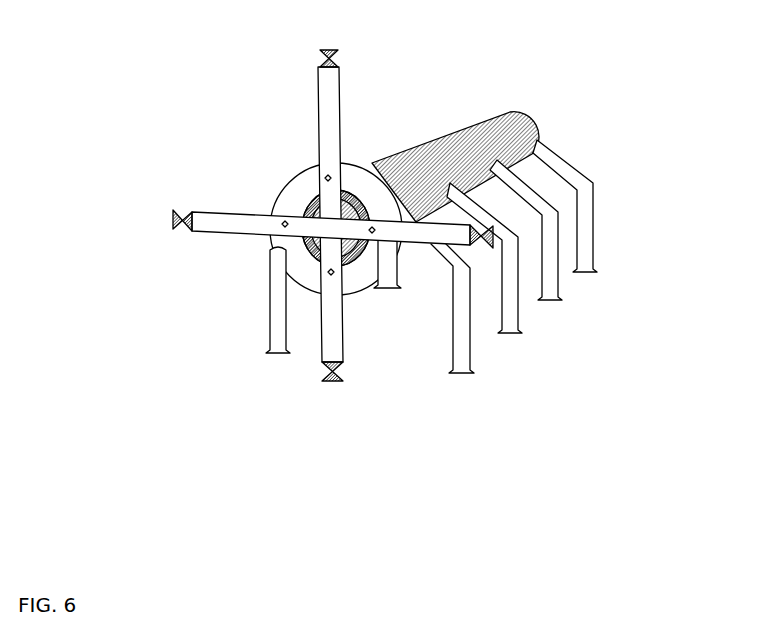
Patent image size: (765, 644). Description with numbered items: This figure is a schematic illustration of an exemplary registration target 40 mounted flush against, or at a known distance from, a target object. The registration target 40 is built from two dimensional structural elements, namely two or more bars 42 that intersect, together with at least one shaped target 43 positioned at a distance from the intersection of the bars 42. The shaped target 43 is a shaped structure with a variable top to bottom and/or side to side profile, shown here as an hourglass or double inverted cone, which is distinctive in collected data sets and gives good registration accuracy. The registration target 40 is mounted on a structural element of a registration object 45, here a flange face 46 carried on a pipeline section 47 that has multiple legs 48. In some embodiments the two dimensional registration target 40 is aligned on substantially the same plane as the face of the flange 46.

The registration target 40 is at (357, 343).
The bars 42 is at (228, 214).
The shaped target 43 is at (333, 52).
The registration object 45 is at (444, 119).
The flange face 46 is at (352, 187).
The pipeline section 47 is at (508, 121).
The legs 48 is at (571, 165).